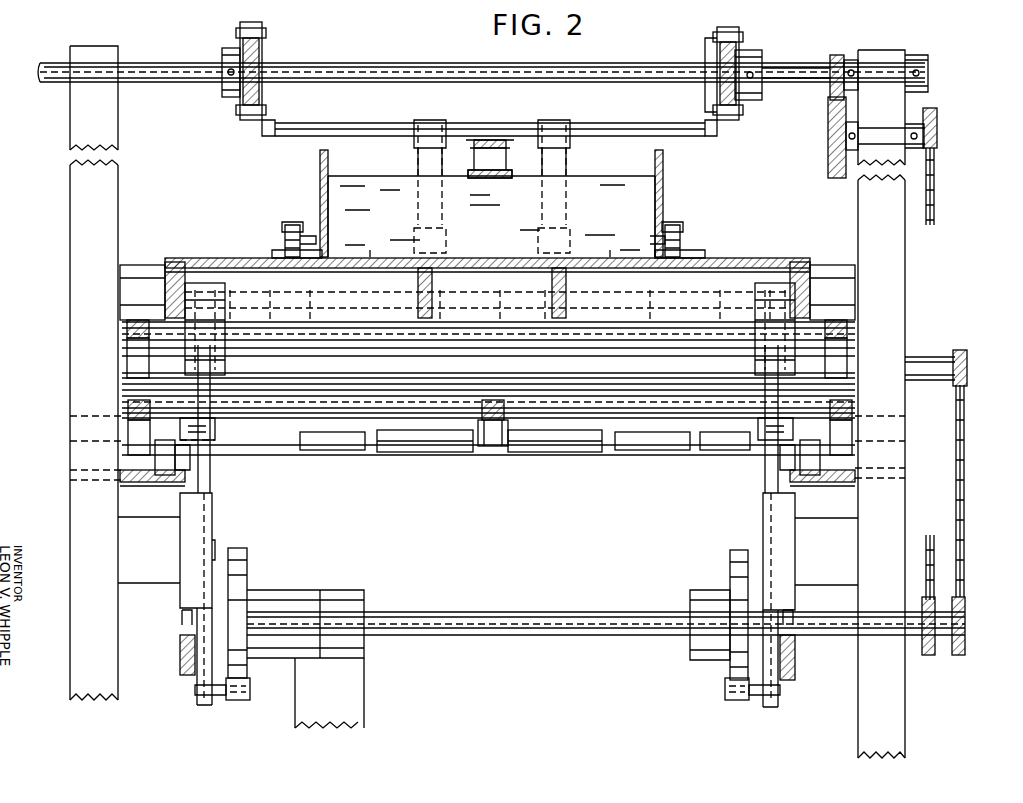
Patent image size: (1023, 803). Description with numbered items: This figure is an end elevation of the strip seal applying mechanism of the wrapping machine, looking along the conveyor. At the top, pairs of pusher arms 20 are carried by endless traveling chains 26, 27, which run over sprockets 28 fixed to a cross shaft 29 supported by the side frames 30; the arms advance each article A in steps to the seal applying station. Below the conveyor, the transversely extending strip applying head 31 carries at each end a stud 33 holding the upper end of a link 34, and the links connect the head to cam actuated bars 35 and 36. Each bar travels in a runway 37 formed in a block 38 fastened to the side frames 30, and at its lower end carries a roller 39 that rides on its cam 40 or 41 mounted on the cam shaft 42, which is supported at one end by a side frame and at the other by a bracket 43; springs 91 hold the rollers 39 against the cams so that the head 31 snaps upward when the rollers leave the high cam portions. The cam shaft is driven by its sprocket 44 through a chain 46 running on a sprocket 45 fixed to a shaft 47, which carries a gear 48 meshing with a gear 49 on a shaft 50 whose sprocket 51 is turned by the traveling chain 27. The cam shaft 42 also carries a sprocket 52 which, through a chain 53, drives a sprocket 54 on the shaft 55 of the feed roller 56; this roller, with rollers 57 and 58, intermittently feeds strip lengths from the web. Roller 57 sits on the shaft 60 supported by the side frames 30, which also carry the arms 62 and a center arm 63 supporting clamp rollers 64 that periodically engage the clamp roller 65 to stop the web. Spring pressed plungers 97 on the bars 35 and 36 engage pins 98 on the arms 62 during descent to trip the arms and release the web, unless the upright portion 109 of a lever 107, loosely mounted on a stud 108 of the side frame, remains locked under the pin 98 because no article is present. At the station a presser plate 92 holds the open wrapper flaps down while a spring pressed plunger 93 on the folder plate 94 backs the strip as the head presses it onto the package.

The pusher arms 20 is at (418, 150).
The endless traveling chain 26 is at (258, 30).
The endless traveling chain 27 is at (737, 26).
The sprockets 28 is at (258, 96).
The cross shaft 29 is at (424, 66).
The side frames 30 is at (76, 158).
The strip applying head 31 is at (482, 258).
The stud 33 is at (232, 300).
The link 34 is at (200, 258).
The cam actuated bar 35 is at (212, 478).
The cam actuated bar 36 is at (765, 470).
The runway 37 is at (212, 540).
The blocks 38 is at (183, 592).
The rollers 39 is at (238, 700).
The cam 40 is at (247, 576).
The cam 41 is at (730, 568).
The cam shaft 42 is at (524, 636).
The bracket 43 is at (360, 706).
The sprocket 44 is at (930, 656).
The sprocket 45 is at (938, 116).
The chain 46 is at (936, 202).
The shaft 47 is at (938, 138).
The gear 48 is at (836, 178).
The gear 49 is at (840, 56).
The shaft 50 is at (798, 80).
The sprocket 51 is at (720, 53).
The sprocket 52 is at (966, 626).
The chain 53 is at (966, 520).
The sprocket 54 is at (965, 356).
The shaft 55 is at (968, 370).
The roller 56 is at (660, 372).
The roller 57 is at (420, 452).
The roller 58 is at (372, 236).
The shaft 60 is at (80, 411).
The arms 62 is at (127, 337).
The center arm 63 is at (490, 446).
The clamp rollers 64 is at (345, 452).
The clamp roller 65 is at (538, 392).
The springs 91 is at (180, 670).
The presser plate 92 is at (276, 250).
The spring pressed plunger 93 is at (290, 222).
The folding and sealing plate 94 is at (320, 166).
The spring pressed plungers 97 is at (190, 440).
The pins 98 is at (160, 450).
The levers 107 is at (188, 462).
The studs 108 is at (80, 468).
The upright portion 109 is at (160, 476).
The article A is at (660, 196).